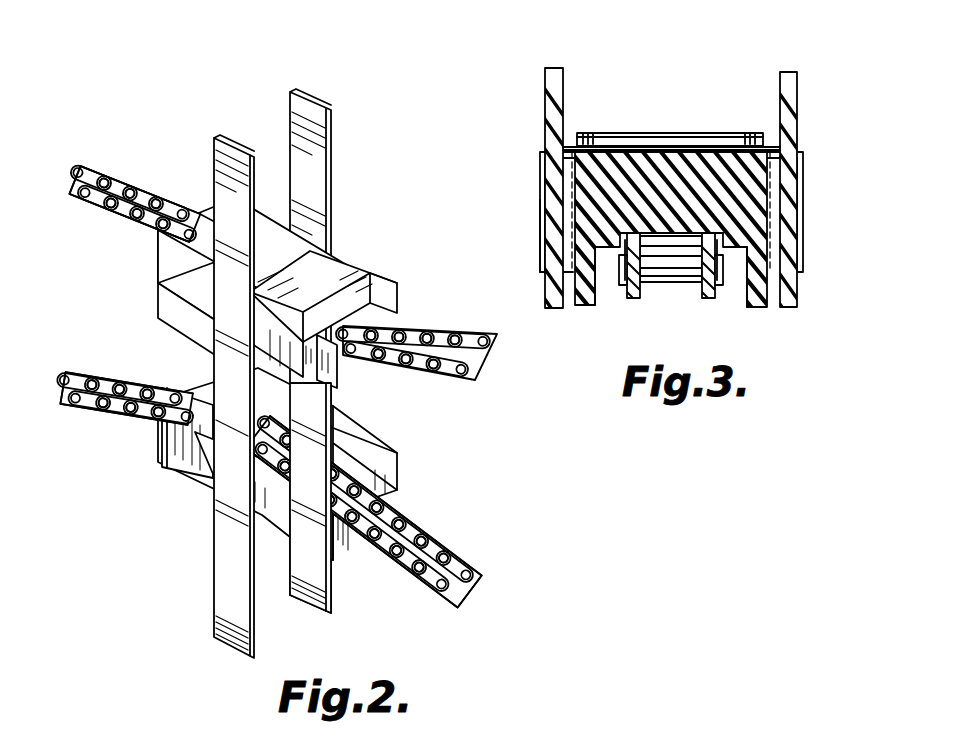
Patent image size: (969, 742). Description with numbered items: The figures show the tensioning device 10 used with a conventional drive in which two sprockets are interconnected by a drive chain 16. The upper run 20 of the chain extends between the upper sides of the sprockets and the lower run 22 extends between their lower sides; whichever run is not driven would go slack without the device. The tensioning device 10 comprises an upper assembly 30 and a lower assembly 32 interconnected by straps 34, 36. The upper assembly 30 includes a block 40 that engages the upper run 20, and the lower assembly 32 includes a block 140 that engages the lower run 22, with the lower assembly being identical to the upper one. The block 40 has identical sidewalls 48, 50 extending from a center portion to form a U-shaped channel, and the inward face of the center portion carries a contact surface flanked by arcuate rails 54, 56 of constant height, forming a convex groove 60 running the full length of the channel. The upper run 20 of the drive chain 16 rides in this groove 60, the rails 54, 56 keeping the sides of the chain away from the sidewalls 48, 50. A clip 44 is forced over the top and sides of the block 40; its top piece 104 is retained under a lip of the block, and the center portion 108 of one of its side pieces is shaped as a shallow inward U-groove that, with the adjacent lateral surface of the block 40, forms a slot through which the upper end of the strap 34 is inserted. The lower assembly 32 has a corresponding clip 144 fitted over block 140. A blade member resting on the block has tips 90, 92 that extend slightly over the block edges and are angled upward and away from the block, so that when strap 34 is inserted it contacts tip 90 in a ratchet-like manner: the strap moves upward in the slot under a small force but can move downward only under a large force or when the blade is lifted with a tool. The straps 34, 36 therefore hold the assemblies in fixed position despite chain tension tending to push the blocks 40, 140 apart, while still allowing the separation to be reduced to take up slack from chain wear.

In FIG. 2, the tensioning device 10 is at (348, 247).
In FIG. 3, the drive chain 16 is at (663, 290).
In FIG. 2, the upper run 20 is at (138, 170).
In FIG. 3, the upper run 20 is at (682, 290).
In FIG. 2, the lower run 22 is at (123, 410).
In FIG. 2, the upper assembly 30 is at (150, 266).
In FIG. 2, the lower assembly 32 is at (165, 473).
In FIG. 2, the strap 34 is at (227, 147).
In FIG. 3, the strap 34 is at (548, 88).
In FIG. 2, the strap 36 is at (308, 110).
In FIG. 3, the strap 36 is at (790, 74).
In FIG. 2, the block 40 is at (376, 285).
In FIG. 3, the block 40 is at (670, 163).
In FIG. 2, the clip 44 is at (196, 277).
In FIG. 3, the clip 44 is at (540, 163).
In FIG. 3, the sidewall 48 is at (585, 305).
In FIG. 3, the sidewall 50 is at (753, 307).
In FIG. 3, the rail 54 is at (600, 247).
In FIG. 3, the rail 56 is at (737, 250).
In FIG. 3, the convex groove 60 is at (622, 245).
In FIG. 3, the tip 90 is at (570, 143).
In FIG. 3, the tip 92 is at (773, 147).
In FIG. 3, the top piece 104 is at (613, 137).
In FIG. 2, the center portion 108 is at (215, 318).
In FIG. 3, the center portion 108 is at (542, 222).
In FIG. 2, the block 140 is at (157, 460).
In FIG. 2, the clip 144 is at (197, 467).